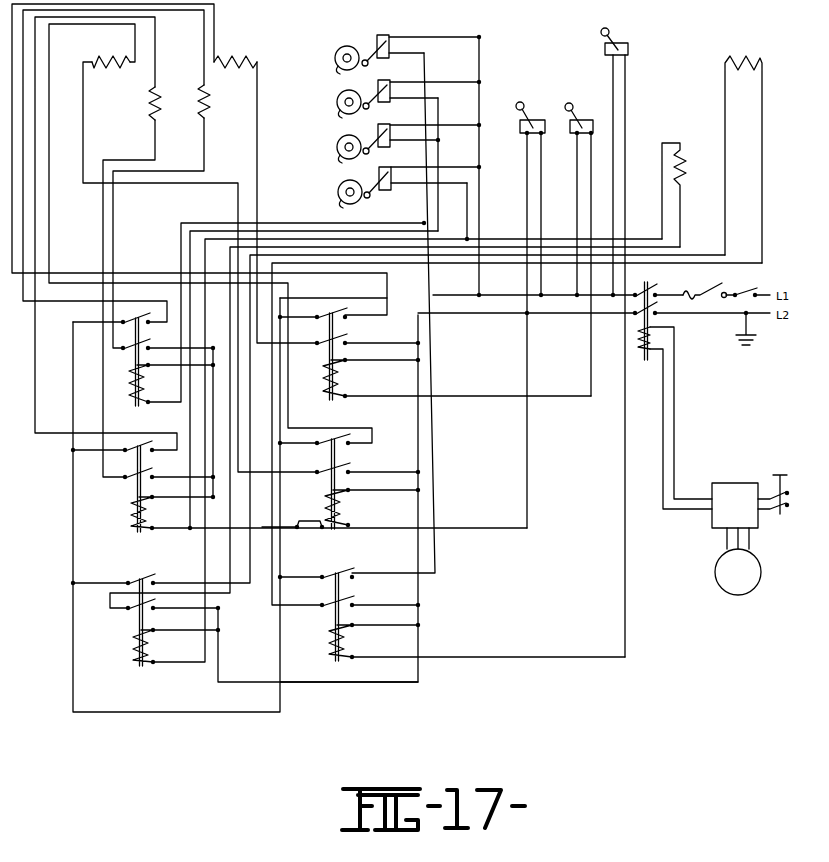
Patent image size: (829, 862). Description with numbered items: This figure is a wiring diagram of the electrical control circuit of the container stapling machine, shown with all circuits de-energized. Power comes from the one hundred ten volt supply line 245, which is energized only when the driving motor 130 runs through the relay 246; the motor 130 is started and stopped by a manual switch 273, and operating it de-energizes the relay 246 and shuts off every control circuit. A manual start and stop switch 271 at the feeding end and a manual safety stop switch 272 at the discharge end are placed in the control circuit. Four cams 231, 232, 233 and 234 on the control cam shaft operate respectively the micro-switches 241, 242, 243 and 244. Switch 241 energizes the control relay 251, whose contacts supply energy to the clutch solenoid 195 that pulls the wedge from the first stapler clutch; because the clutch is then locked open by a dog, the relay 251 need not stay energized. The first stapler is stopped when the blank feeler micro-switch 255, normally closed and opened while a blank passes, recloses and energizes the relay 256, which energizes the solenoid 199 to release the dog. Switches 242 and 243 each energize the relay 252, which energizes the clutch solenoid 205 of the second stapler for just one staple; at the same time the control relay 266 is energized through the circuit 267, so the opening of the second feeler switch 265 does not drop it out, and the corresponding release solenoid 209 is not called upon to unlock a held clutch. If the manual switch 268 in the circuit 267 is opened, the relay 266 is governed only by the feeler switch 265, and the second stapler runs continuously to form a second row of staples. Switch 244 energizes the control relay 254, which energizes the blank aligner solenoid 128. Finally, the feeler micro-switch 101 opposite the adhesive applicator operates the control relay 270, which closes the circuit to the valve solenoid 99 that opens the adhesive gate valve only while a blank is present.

The solenoid 99 is at (750, 62).
The micro-switch 101 is at (629, 45).
The solenoid 128 is at (683, 160).
The driving motor 130 is at (733, 595).
The solenoid 195 is at (208, 100).
The second solenoid 199 is at (258, 60).
The solenoid 205 is at (158, 118).
The solenoid 209 is at (100, 72).
The cam 231 is at (335, 64).
The second cam 232 is at (336, 107).
The third cam 233 is at (336, 150).
The fourth cam 234 is at (337, 194).
The micro-switch 241 is at (390, 37).
The micro switch 242 is at (384, 80).
The third micro-switch 243 is at (384, 124).
The micro-switch 244 is at (385, 167).
The power supply line 245 is at (452, 298).
The relay 246 is at (652, 342).
The control relay 251 is at (143, 391).
The relay 252 is at (147, 519).
The control relay 254 is at (149, 653).
The micro-switch 255 is at (571, 135).
The relay 256 is at (346, 385).
The feeler switch 265 is at (522, 135).
The control relay 266 is at (346, 514).
The circuit 267 is at (265, 526).
The manual switch 268 is at (306, 530).
The control relay 270 is at (348, 645).
The manual start and stop switch 271 is at (716, 288).
The manual safety stop switch 272 is at (750, 292).
The manual switch 273 is at (780, 472).